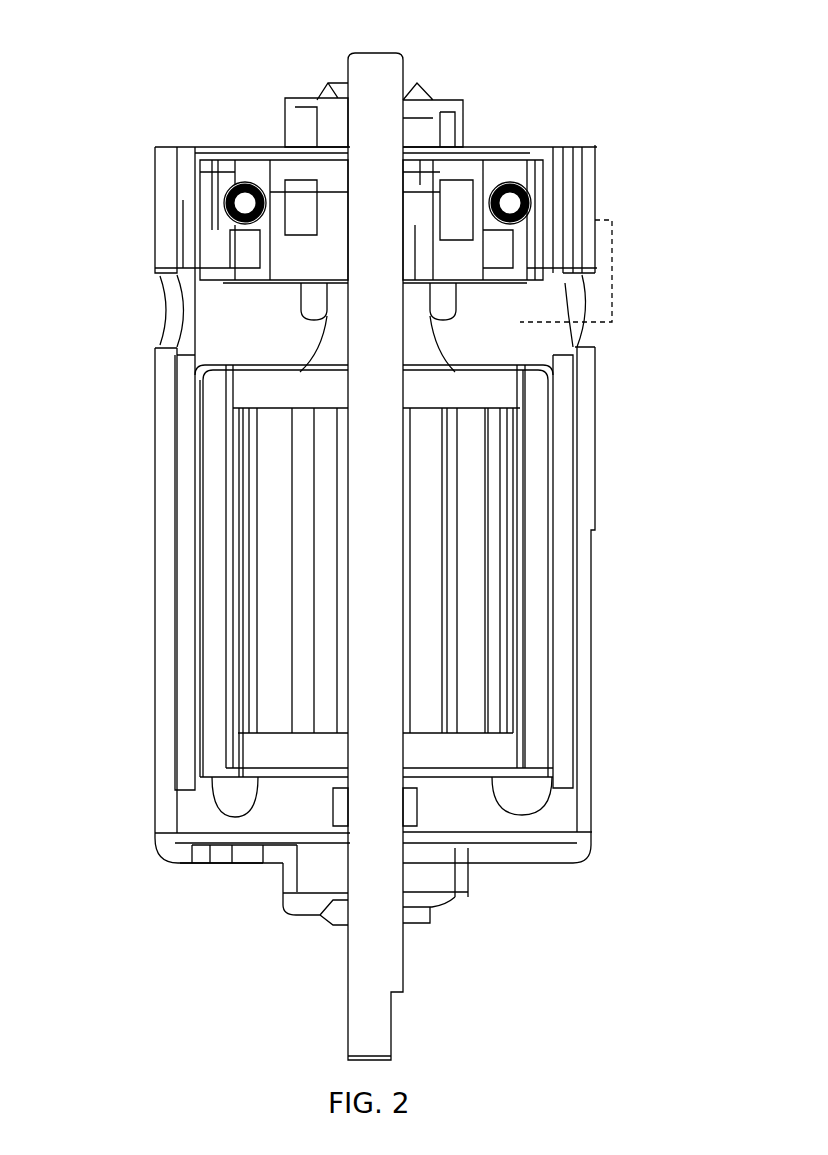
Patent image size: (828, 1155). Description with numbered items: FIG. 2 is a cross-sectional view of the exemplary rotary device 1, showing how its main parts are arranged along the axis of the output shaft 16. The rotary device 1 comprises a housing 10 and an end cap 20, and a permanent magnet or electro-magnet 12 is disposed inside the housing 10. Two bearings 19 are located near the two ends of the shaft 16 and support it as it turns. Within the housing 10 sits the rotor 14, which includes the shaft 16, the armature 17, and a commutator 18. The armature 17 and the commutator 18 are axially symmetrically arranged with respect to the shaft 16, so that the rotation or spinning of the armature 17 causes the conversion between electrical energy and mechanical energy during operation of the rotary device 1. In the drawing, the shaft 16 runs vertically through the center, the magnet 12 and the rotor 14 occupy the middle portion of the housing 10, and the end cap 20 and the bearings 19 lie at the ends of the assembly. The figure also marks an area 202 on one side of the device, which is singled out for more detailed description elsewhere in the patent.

The rotary device 1 is at (312, 50).
The housing 10 is at (175, 330).
The permanent magnet or electro-magnet 12 is at (563, 467).
The rotor 14 is at (92, 393).
The shaft 16 is at (372, 590).
The armature 17 is at (280, 508).
The commutator 18 is at (347, 338).
The bearings 19 is at (417, 117).
The end cap 20 is at (275, 183).
The area 202 is at (612, 260).